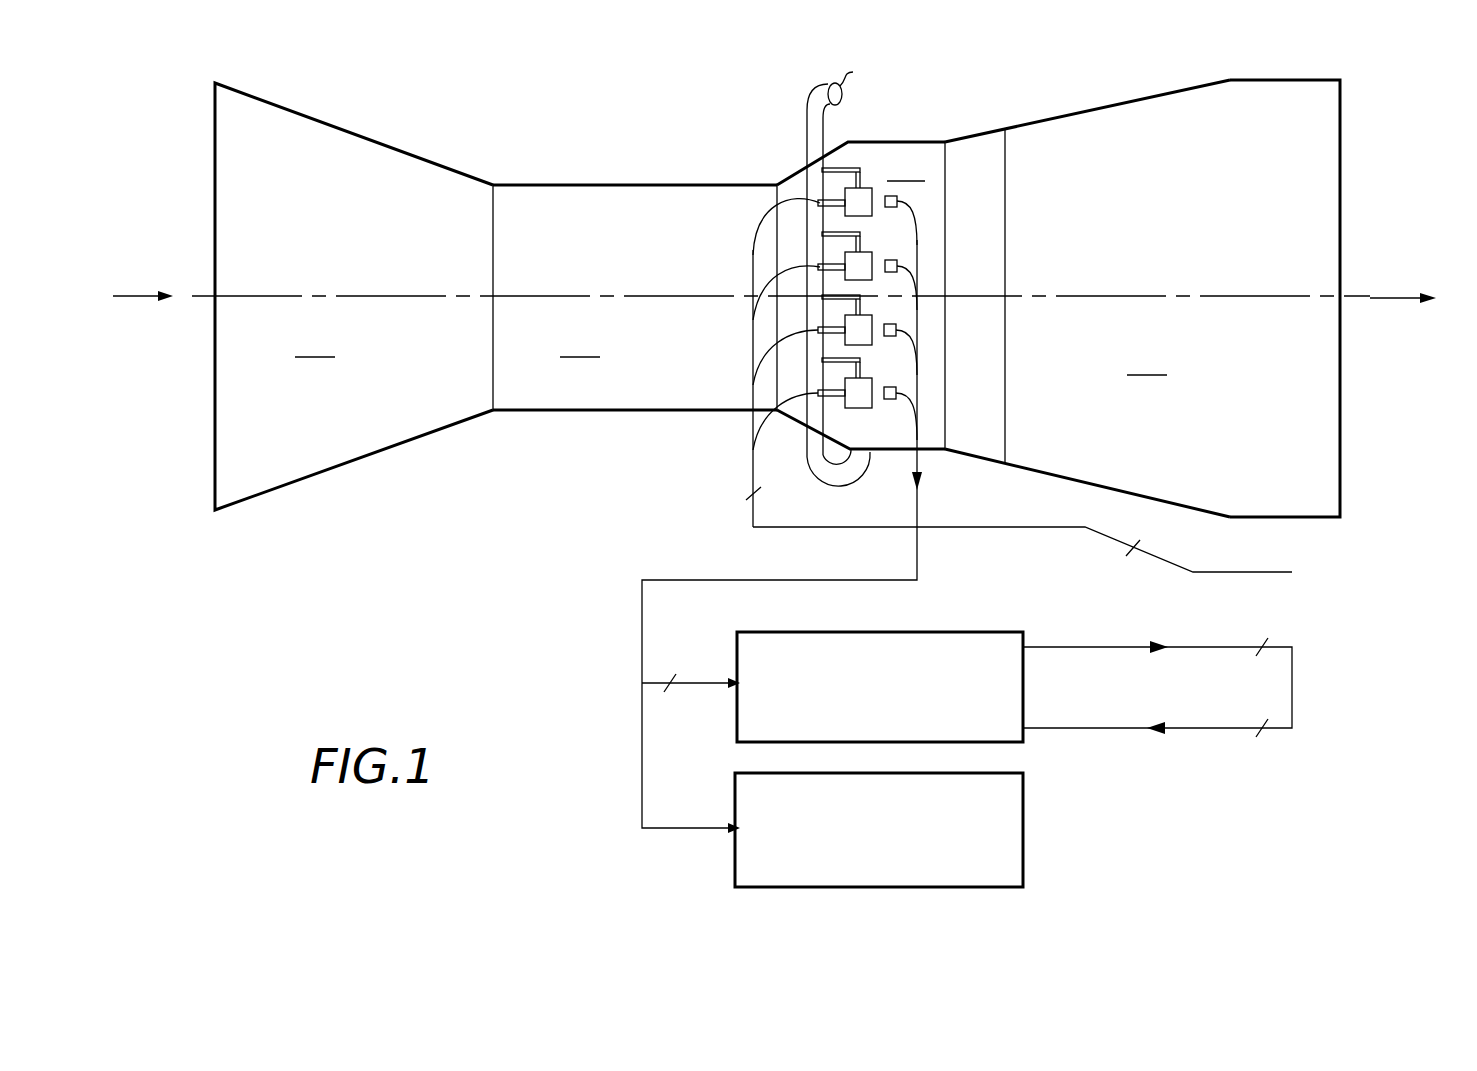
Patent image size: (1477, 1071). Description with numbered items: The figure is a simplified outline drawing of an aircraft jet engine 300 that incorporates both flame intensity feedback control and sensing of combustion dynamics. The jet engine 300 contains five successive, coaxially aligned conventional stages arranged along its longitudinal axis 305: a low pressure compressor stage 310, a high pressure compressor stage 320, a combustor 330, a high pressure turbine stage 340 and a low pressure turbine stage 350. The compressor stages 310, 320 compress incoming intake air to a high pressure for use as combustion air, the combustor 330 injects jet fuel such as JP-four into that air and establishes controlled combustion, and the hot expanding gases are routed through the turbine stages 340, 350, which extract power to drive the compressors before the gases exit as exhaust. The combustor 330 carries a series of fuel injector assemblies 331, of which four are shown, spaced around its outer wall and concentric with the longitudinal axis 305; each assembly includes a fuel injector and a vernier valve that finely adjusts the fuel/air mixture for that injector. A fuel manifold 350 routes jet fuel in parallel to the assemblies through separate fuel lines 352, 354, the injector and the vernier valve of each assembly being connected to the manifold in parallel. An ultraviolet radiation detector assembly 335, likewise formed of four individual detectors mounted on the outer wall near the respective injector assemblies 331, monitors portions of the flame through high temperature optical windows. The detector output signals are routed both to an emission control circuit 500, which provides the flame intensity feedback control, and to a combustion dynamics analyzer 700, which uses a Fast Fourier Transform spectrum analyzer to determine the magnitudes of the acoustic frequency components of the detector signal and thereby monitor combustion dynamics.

The aircraft jet engine 300 is at (777, 446).
The longitudinal axis 305 is at (193, 296).
The low pressure compressor stage 310 is at (354, 296).
The high pressure compressor stage 320 is at (635, 297).
The combustor 330 is at (867, 160).
The fuel injector assemblies 331 is at (862, 216).
The detector assembly 335 is at (897, 200).
The high pressure turbine stage 340 is at (980, 455).
The low pressure turbine stage 350 is at (837, 487).
The fuel line 352 is at (807, 158).
The fuel line 354 is at (818, 203).
The emission control circuit 500 is at (737, 713).
The combustion dynamics analyzer 700 is at (1023, 828).